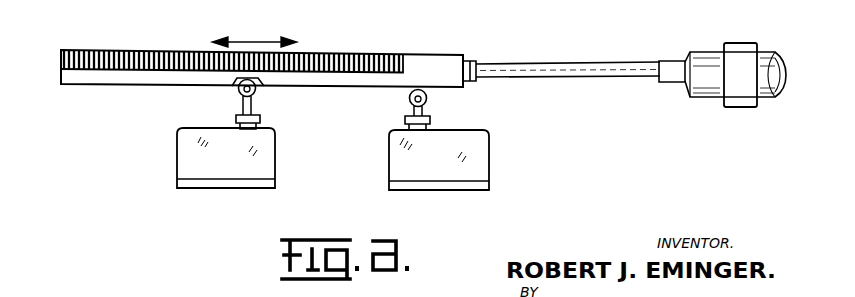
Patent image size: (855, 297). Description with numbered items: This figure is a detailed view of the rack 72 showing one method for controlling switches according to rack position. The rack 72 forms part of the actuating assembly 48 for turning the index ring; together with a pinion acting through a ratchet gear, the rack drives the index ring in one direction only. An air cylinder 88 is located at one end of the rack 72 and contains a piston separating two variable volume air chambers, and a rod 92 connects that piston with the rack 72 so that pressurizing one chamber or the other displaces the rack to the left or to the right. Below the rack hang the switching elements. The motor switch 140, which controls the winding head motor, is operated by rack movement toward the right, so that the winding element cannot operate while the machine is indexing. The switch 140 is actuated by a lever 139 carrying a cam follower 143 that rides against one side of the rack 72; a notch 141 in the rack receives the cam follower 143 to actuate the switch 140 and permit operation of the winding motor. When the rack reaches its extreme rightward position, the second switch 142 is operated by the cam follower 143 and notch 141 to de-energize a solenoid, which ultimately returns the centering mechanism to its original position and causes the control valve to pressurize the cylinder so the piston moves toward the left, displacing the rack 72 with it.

The rack 72 is at (318, 52).
The rod 92 is at (548, 63).
The actuating assembly 48 is at (744, 50).
The air cylinder 88 is at (705, 90).
The notch 141 is at (238, 94).
The cam follower 143 is at (256, 92).
The lever 139 is at (253, 107).
The motor switch 140 is at (185, 156).
The switch 142 is at (485, 162).